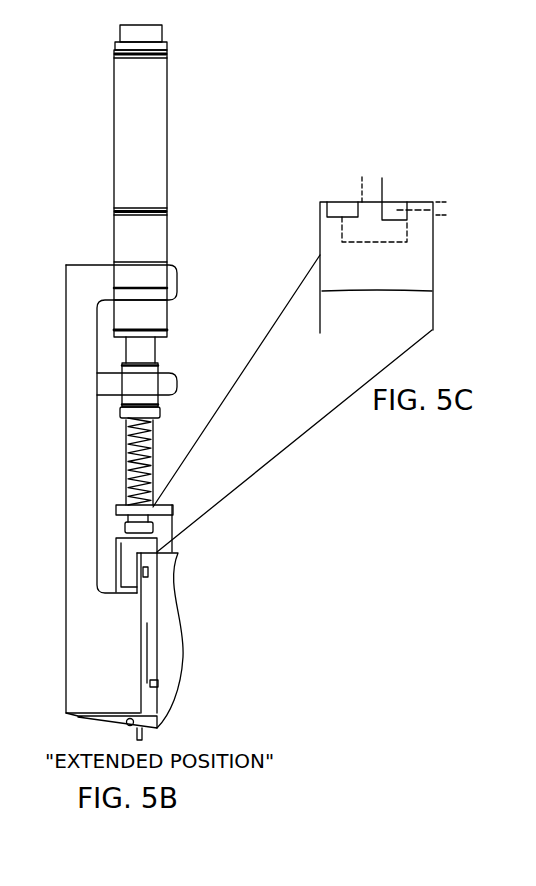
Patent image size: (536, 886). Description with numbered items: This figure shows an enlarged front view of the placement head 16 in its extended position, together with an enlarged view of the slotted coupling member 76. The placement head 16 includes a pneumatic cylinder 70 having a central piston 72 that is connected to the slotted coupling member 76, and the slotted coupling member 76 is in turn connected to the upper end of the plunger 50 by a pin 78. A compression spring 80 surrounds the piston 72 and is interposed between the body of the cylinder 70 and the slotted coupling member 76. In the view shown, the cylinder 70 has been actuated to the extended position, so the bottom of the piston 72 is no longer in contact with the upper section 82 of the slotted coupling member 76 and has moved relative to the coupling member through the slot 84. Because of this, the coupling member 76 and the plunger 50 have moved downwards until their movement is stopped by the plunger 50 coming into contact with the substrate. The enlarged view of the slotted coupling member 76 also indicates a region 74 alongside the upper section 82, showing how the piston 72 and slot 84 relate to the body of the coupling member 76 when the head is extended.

In FIG. 5B, the placement head 16 is at (120, 28).
In FIG. 5B, the pneumatic cylinder 70 is at (167, 203).
In FIG. 5B, the compression spring 80 is at (153, 433).
In FIG. 5B, the piston 72 is at (153, 465).
In FIG. 5C, the piston 72 is at (382, 178).
In FIG. 5B, the upper section 82 is at (174, 510).
In FIG. 5C, the upper section 82 is at (447, 198).
In FIG. 5B, the block 74 is at (157, 528).
In FIG. 5C, the block 74 is at (440, 223).
In FIG. 5B, the slotted coupling member 76 is at (167, 553).
In FIG. 5C, the slotted coupling member 76 is at (320, 232).
In FIG. 5B, the pin 78 is at (148, 572).
In FIG. 5B, the plunger 50 is at (141, 587).
In FIG. 5C, the slot 84 is at (358, 203).